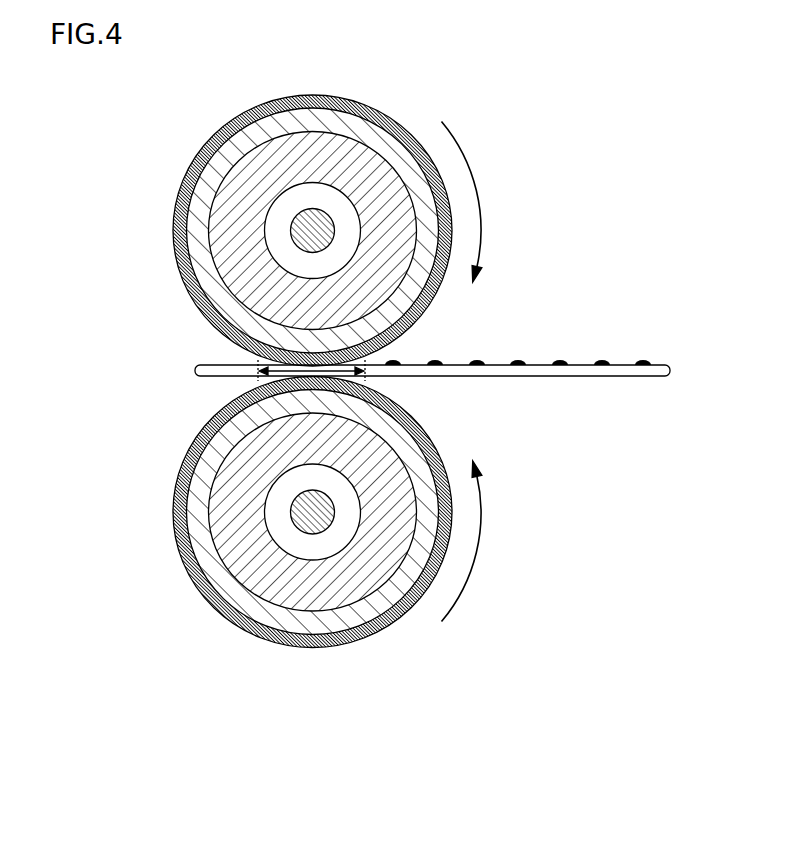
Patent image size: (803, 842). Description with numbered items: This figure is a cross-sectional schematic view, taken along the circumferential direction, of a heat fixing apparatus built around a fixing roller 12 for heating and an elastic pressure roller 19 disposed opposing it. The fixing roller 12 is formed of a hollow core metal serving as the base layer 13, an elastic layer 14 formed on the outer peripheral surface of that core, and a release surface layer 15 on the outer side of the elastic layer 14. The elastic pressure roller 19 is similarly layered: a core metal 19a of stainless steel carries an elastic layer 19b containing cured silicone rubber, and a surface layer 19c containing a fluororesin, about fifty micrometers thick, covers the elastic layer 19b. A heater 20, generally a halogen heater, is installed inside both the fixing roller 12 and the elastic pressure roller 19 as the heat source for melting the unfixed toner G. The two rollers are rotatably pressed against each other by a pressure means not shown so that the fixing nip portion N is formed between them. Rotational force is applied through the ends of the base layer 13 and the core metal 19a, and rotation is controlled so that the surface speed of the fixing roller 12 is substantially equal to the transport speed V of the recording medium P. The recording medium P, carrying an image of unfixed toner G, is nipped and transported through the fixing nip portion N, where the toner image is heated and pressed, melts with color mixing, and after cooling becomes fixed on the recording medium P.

The fixing roller 12 is at (261, 230).
The base layer 13 is at (243, 177).
The elastic layer 14 is at (194, 233).
The release surface layer 15 is at (181, 272).
The elastic pressure roller 19 is at (252, 511).
The core metal 19a is at (243, 460).
The elastic layer 19b is at (199, 511).
The surface layer 19c is at (179, 552).
The heater 20 is at (322, 212).
The fixing nip portion N is at (213, 404).
The recording medium P is at (498, 377).
The unfixed toner G is at (517, 362).
The transport speed V is at (563, 331).